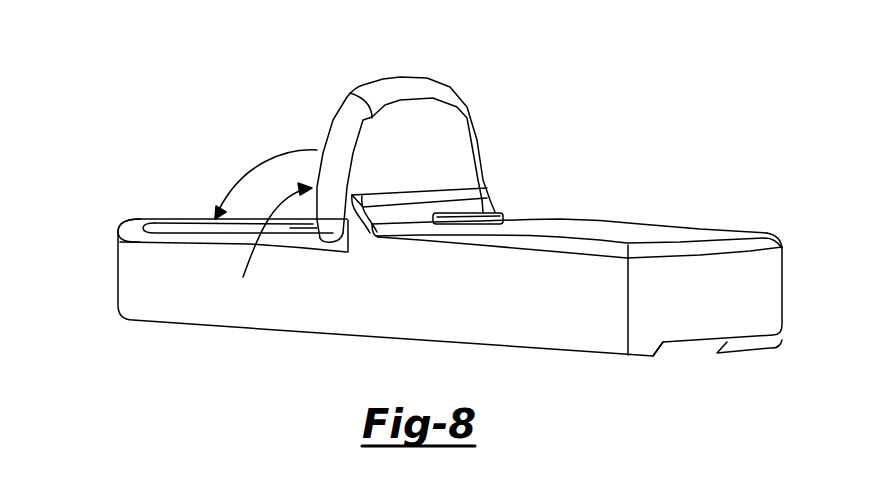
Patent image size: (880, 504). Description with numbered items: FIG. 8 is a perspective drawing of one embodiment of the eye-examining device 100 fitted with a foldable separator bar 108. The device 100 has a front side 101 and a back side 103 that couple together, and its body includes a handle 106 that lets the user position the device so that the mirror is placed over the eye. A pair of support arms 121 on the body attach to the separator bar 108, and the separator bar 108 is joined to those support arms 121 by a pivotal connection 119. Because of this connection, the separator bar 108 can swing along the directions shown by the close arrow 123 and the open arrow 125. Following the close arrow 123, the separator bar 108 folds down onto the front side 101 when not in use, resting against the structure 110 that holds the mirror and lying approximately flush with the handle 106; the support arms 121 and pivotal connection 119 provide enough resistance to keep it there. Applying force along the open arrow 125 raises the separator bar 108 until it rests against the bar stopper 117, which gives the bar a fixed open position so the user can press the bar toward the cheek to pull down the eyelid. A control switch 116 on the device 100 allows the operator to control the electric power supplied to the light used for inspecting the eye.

The device 100 is at (645, 112).
The front side 101 is at (658, 226).
The back side 103 is at (567, 352).
The handle 106 is at (477, 315).
The separator bar 108 is at (402, 83).
The structure 110 is at (143, 289).
The control switch 116 is at (482, 211).
The bar stopper 117 is at (423, 197).
The pivotal connection 119 is at (335, 233).
The support arms 121 is at (320, 226).
The close arrow 123 is at (253, 173).
The open arrow 125 is at (270, 243).